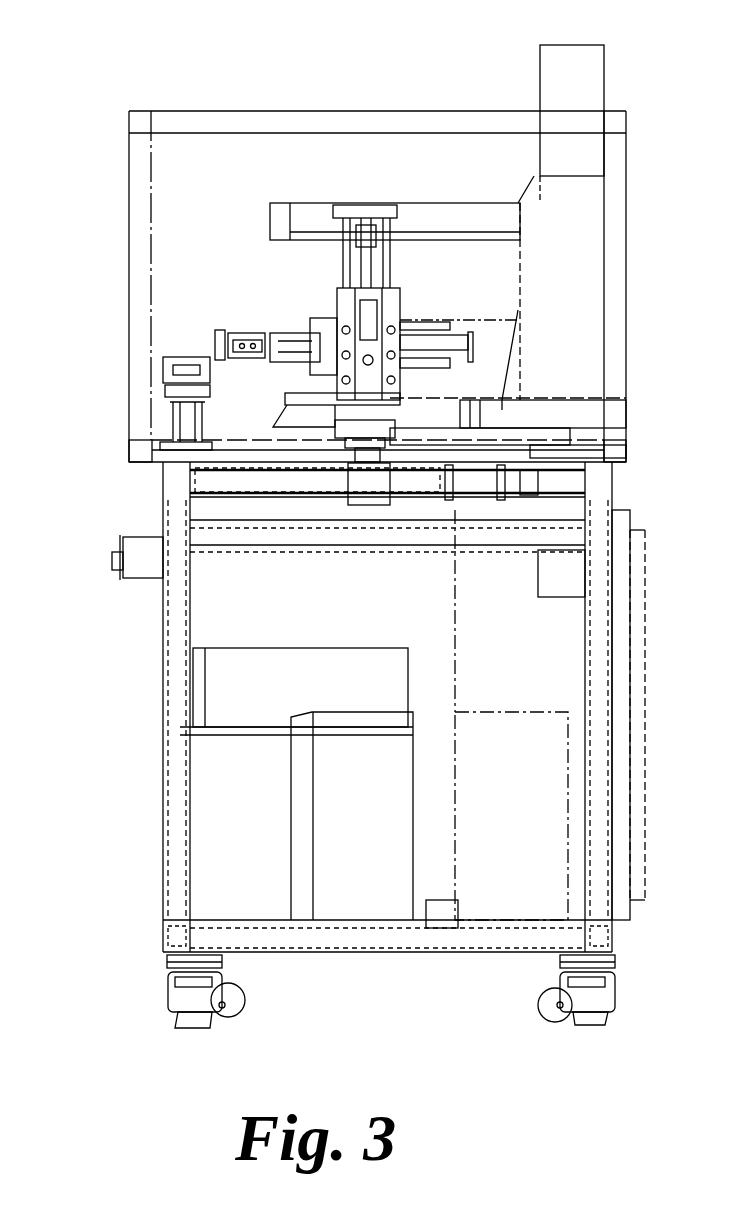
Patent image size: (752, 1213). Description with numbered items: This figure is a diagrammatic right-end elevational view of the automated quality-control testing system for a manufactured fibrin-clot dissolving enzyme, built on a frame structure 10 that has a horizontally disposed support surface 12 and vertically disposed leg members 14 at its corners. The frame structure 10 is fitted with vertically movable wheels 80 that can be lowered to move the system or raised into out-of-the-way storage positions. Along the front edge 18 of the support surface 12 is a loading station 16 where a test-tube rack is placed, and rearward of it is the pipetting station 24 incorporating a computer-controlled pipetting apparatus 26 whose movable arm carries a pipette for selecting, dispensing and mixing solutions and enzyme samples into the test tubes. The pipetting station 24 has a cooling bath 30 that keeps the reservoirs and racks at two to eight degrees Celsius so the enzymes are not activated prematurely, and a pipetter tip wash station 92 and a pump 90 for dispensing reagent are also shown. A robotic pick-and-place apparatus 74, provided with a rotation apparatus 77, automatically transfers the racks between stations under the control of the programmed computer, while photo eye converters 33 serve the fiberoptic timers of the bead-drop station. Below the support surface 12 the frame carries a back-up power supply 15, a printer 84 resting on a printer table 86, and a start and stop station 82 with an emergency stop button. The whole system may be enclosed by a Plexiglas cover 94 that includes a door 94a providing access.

The frame structure 10 is at (155, 645).
The support surface 12 is at (250, 440).
The leg members 14 is at (165, 770).
The back-up power supply 15 is at (437, 710).
The loading station 16 is at (160, 342).
The front edge 18 is at (130, 450).
The pipetting station 24 is at (335, 182).
The pipetting apparatus 26 is at (440, 200).
The cooling bath 30 is at (330, 320).
The photo eye converters 33 is at (560, 600).
The robotic pick-and-place apparatus 74 is at (280, 326).
The rotation apparatus 77 is at (365, 500).
The wheels 80 is at (252, 1000).
The start and stop station 82 is at (112, 540).
The printer 84 is at (292, 648).
The printer table 86 is at (230, 730).
The pump 90 is at (540, 70).
The pipetter tip wash station 92 is at (518, 380).
The cover 94 is at (343, 110).
The door 94a is at (130, 265).